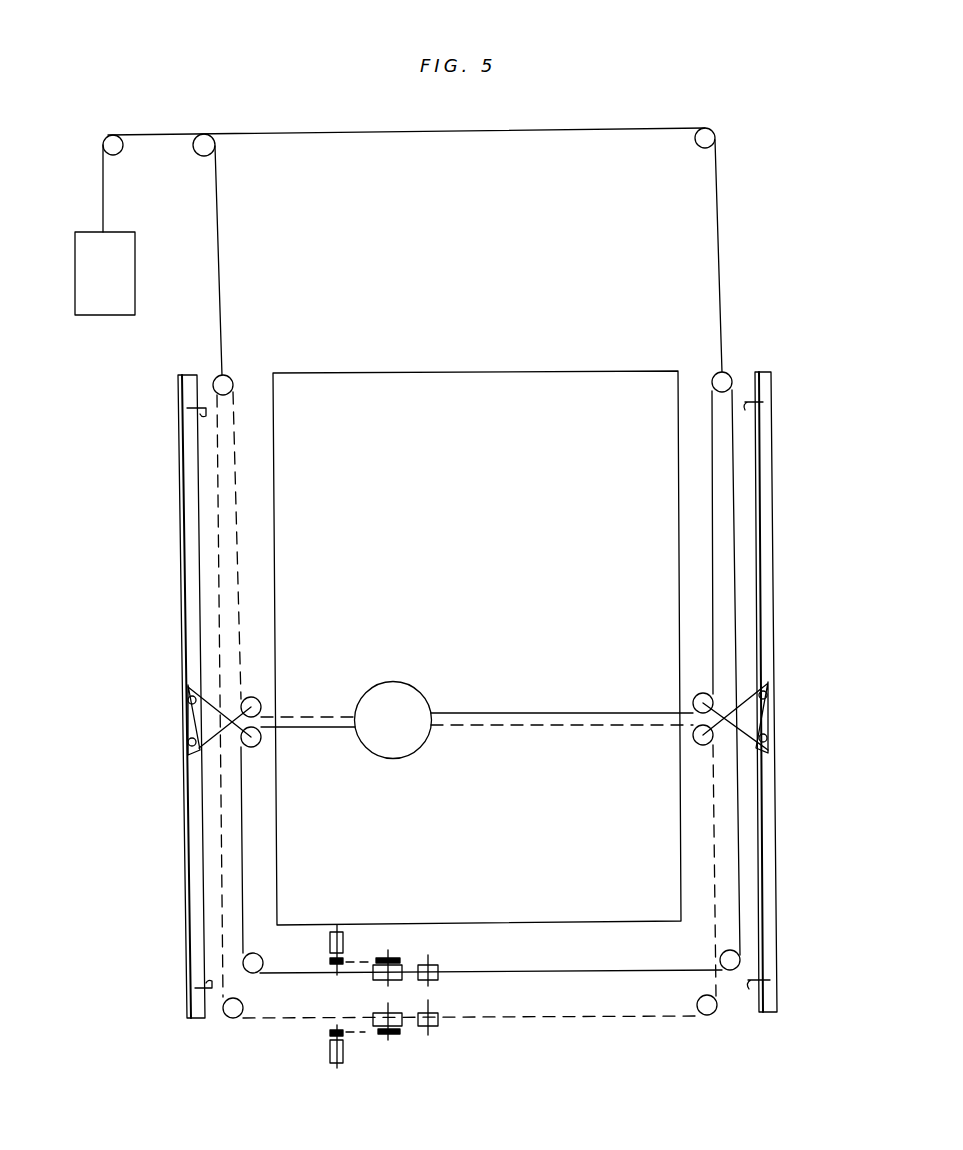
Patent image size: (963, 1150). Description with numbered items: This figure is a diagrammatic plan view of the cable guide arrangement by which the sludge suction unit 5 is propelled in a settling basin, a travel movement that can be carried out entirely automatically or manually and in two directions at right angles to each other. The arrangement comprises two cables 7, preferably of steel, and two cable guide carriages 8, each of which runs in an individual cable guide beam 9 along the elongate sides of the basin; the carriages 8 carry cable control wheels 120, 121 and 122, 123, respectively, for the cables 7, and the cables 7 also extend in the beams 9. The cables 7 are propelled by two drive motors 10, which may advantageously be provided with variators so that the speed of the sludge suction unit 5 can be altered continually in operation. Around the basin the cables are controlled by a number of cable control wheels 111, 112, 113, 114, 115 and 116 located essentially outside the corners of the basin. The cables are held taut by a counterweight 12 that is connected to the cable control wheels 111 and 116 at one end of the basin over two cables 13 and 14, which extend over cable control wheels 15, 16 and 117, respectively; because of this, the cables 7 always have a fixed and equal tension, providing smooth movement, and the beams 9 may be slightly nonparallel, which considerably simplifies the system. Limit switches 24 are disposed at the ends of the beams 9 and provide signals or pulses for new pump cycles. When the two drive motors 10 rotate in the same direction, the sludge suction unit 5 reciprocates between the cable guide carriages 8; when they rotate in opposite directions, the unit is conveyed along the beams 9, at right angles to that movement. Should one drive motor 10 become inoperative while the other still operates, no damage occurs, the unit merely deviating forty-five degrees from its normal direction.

The sludge suction unit 5 is at (368, 753).
The cables 7 is at (713, 615).
The cable guide carriages 8 is at (188, 713).
The cable guide beam 9 is at (178, 521).
The drive motors 10 is at (405, 978).
The counterweight 12 is at (108, 315).
The cable 13 is at (223, 337).
The cable 14 is at (723, 226).
The cable control wheel 15 is at (207, 138).
The cable control wheel 16 is at (116, 135).
The limit switches 24 is at (198, 410).
The cable control wheel 111 is at (217, 388).
The cable control wheel 112 is at (250, 962).
The cable control wheel 113 is at (233, 1018).
The cable control wheel 114 is at (708, 1015).
The cable control wheel 115 is at (740, 960).
The cable control wheel 116 is at (723, 380).
The cable control wheel 117 is at (708, 131).
The cable control wheel 120 is at (248, 696).
The cable control wheel 121 is at (244, 745).
The cable control wheel 122 is at (705, 694).
The cable control wheel 123 is at (709, 742).